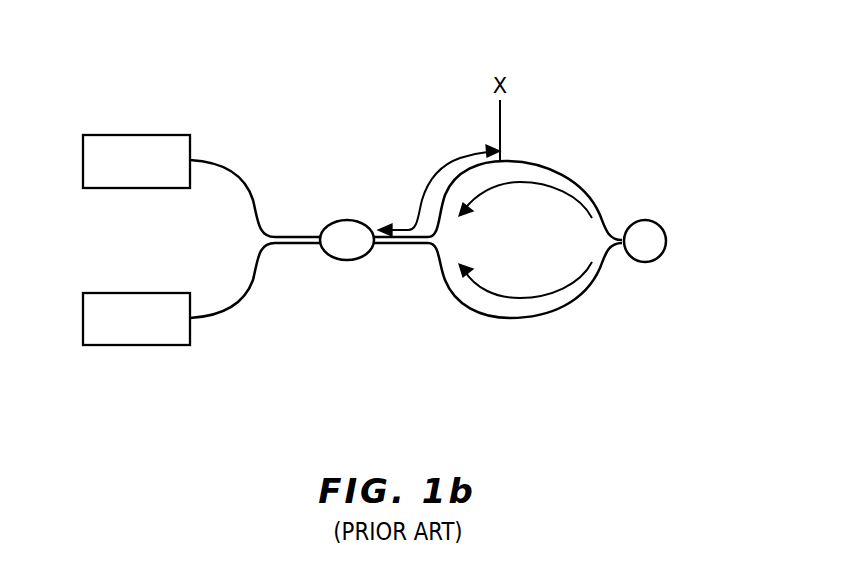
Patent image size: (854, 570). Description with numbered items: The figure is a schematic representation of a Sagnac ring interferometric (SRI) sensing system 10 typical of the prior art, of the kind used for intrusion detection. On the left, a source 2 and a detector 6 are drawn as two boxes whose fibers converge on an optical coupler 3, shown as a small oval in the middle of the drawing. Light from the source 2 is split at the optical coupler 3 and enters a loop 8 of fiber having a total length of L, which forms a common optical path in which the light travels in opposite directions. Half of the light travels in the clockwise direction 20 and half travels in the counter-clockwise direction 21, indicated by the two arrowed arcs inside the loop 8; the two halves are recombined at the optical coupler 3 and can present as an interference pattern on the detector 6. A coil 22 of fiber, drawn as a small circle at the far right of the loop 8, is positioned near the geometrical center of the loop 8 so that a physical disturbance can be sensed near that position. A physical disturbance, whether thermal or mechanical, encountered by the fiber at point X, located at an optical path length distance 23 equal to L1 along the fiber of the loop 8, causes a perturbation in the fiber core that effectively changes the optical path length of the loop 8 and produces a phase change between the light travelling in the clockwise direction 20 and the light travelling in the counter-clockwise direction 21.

The SRI sensing system 10 is at (308, 107).
The detector 6 is at (107, 134).
The source 2 is at (103, 346).
The optical coupler 3 is at (347, 260).
The loop 8 is at (533, 162).
The optical path length distance 23 is at (455, 158).
The counter-clockwise direction 21 is at (558, 185).
The clockwise direction 20 is at (480, 287).
The coil 22 is at (661, 226).